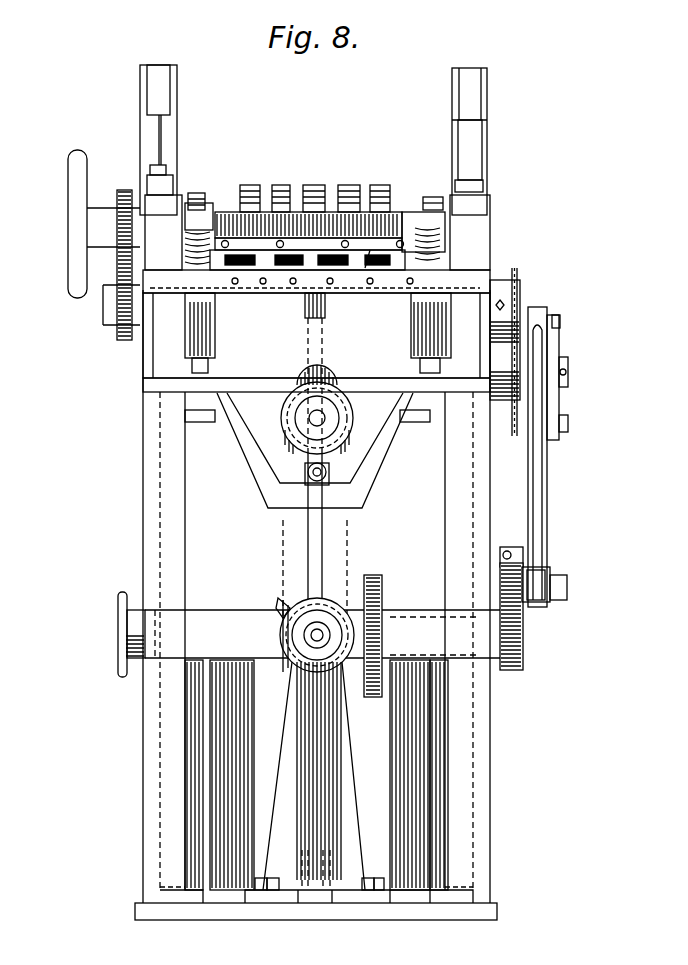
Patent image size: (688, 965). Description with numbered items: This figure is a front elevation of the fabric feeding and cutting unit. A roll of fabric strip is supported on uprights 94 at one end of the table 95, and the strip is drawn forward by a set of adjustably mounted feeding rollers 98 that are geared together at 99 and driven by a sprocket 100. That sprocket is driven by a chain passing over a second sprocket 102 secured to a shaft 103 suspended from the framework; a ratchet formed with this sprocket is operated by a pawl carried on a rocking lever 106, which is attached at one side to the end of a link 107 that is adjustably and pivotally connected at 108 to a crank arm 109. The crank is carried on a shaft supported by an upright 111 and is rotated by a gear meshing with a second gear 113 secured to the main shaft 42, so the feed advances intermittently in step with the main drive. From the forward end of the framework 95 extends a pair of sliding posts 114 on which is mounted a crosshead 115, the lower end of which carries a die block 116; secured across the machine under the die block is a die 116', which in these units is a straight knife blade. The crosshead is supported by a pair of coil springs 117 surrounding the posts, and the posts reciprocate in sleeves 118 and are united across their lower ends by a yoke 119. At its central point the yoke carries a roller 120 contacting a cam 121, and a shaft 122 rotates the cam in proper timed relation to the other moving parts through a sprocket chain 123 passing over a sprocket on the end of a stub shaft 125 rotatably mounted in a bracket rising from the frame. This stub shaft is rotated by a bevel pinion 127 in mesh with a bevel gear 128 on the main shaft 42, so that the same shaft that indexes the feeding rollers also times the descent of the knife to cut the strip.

The main shaft 42 is at (118, 640).
The uprights 94 is at (140, 108).
The table 95 is at (480, 290).
The feeding rollers 98 is at (283, 186).
The gearing 99 is at (122, 192).
The sprocket 100 is at (515, 272).
The sprocket 102 is at (513, 436).
The shaft 103 is at (568, 372).
The rocking lever 106 is at (552, 400).
The link 107 is at (547, 482).
The pivotal connection 108 is at (567, 588).
The crank arm 109 is at (522, 640).
The upright 111 is at (395, 757).
The second gear 113 is at (378, 576).
The sliding posts 114 is at (196, 193).
The crosshead 115 is at (365, 222).
The die block 116 is at (394, 218).
The die 116' is at (298, 361).
The coil springs 117 is at (213, 203).
The sleeves 118 is at (215, 335).
The yoke 119 is at (395, 448).
The roller 120 is at (300, 485).
The cam 121 is at (323, 375).
The shaft 122 is at (317, 418).
The sprocket chain 123 is at (347, 532).
The stub shaft 125 is at (317, 635).
The bevel pinion 127 is at (342, 650).
The bevel gear 128 is at (283, 662).